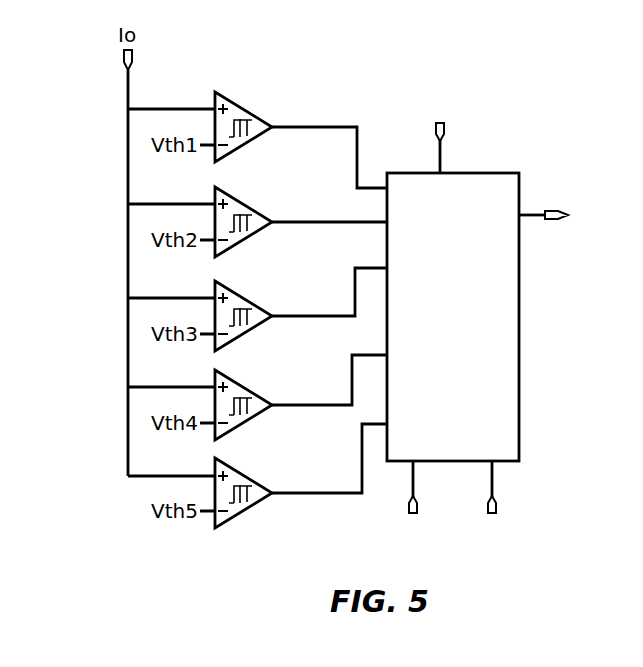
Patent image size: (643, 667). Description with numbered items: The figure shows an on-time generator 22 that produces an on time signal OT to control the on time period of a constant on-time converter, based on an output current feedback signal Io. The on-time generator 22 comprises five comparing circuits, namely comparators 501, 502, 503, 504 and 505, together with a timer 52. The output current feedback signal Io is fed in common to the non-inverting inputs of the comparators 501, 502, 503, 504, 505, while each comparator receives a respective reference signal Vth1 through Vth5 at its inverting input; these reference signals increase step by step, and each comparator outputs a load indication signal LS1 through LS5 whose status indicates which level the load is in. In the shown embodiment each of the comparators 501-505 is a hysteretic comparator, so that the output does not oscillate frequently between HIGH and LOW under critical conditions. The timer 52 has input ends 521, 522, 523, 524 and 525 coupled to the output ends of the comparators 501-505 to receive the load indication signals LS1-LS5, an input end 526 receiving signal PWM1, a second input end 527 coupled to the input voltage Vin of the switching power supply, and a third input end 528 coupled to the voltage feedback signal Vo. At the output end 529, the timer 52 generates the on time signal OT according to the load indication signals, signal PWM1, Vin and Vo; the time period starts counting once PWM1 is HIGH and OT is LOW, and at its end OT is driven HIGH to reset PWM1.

The on-time generator 22 is at (548, 58).
The timer 52 is at (432, 437).
The comparator 501 is at (248, 111).
The comparator 502 is at (248, 206).
The comparator 503 is at (248, 300).
The comparator 504 is at (248, 389).
The comparator 505 is at (248, 477).
The input end of timer 521 is at (381, 186).
The input end of timer 522 is at (383, 220).
The input end of timer 523 is at (384, 266).
The input end of timer 524 is at (385, 352).
The input end of timer 525 is at (385, 428).
The input end of timer 526 is at (452, 172).
The second input end 527 is at (416, 463).
The third input end 528 is at (500, 463).
The output end 529 is at (520, 220).